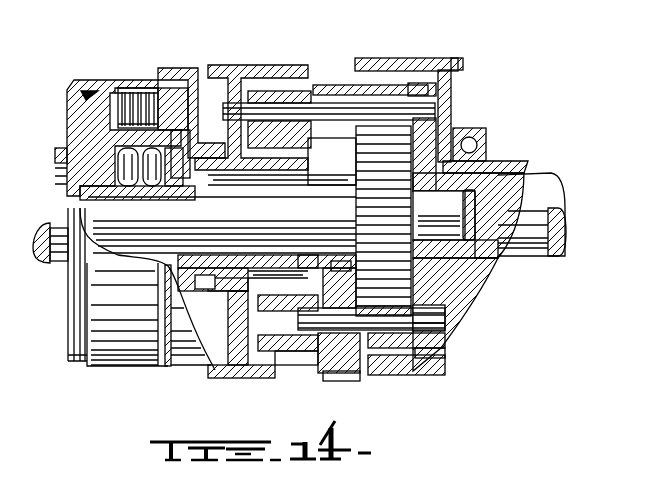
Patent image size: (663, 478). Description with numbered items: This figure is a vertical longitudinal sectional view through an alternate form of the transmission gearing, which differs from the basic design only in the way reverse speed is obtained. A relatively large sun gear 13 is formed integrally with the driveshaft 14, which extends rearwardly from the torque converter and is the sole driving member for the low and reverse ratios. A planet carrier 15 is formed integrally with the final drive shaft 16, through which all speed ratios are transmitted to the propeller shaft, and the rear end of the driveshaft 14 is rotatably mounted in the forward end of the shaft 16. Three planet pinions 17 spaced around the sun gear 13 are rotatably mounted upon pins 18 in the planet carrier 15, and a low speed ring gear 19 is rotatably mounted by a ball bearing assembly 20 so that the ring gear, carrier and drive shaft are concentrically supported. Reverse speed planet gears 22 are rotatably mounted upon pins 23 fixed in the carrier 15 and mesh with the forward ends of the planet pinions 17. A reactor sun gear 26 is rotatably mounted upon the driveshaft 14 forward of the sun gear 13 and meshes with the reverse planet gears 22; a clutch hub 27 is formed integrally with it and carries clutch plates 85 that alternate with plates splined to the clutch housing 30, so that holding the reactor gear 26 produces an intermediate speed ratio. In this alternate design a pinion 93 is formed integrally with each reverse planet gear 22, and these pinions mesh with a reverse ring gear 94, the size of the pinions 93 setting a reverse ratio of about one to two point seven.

The sun gear 13 is at (427, 127).
The driveshaft 14 is at (186, 219).
The planet carrier 15 is at (250, 87).
The final drive shaft 16 is at (540, 152).
The planet pinions 17 is at (400, 50).
The pins 18 is at (417, 97).
The low speed ring gear 19 is at (443, 53).
The ball bearing assembly 20 is at (477, 124).
The reverse speed planet gears 22 is at (343, 373).
The pins 23 is at (400, 315).
The reactor sun gear 26 is at (333, 253).
The clutch hub 27 is at (105, 136).
The clutch housing 30 is at (83, 77).
The clutch plates 85 is at (170, 58).
The pinion 93 is at (293, 345).
The reverse ring gear 94 is at (277, 67).